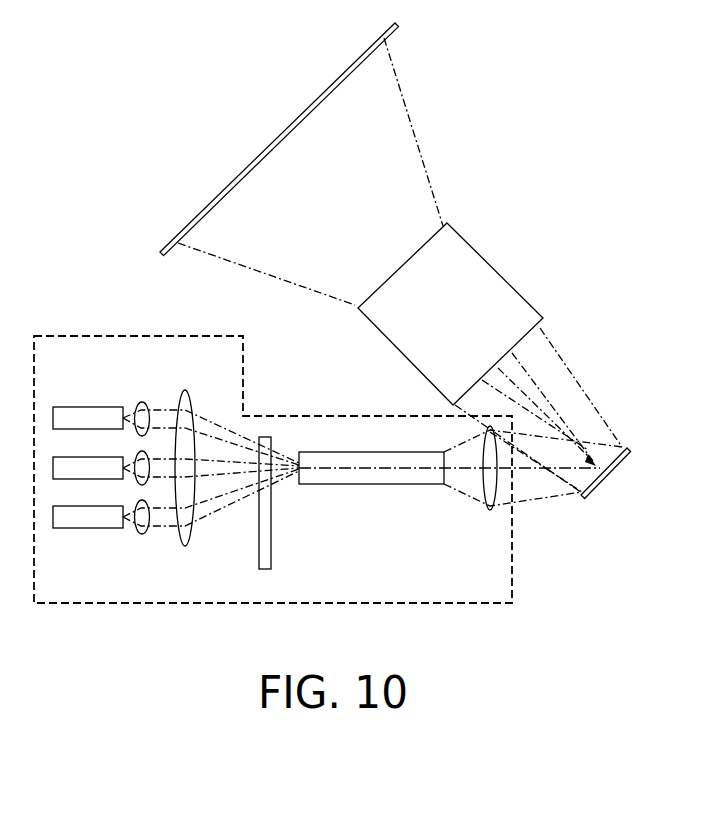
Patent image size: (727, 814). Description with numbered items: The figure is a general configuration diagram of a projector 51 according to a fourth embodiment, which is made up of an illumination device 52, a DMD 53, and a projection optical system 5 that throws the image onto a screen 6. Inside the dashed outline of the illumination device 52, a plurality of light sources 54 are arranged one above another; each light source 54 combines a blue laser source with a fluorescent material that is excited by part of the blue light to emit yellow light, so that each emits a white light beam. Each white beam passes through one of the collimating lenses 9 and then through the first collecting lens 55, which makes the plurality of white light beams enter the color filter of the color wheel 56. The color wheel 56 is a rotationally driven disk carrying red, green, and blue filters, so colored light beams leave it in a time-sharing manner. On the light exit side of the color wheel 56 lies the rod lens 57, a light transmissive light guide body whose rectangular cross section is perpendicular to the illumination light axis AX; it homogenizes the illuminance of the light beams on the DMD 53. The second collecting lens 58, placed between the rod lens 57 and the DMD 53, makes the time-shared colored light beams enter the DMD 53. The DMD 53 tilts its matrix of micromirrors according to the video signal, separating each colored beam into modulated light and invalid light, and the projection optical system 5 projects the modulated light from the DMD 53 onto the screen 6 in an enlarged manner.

The projection optical system 5 is at (483, 275).
The screen 6 is at (292, 116).
The collimating lenses 9 is at (140, 402).
The projector 51 is at (90, 298).
The illumination device 52 is at (322, 413).
The DMD 53 is at (608, 480).
The light sources 54 is at (91, 404).
The first collecting lens 55 is at (185, 392).
The color wheel 56 is at (268, 556).
The rod lens 57 is at (375, 486).
The second collecting lens 58 is at (490, 515).
The illumination light axis AX is at (424, 470).